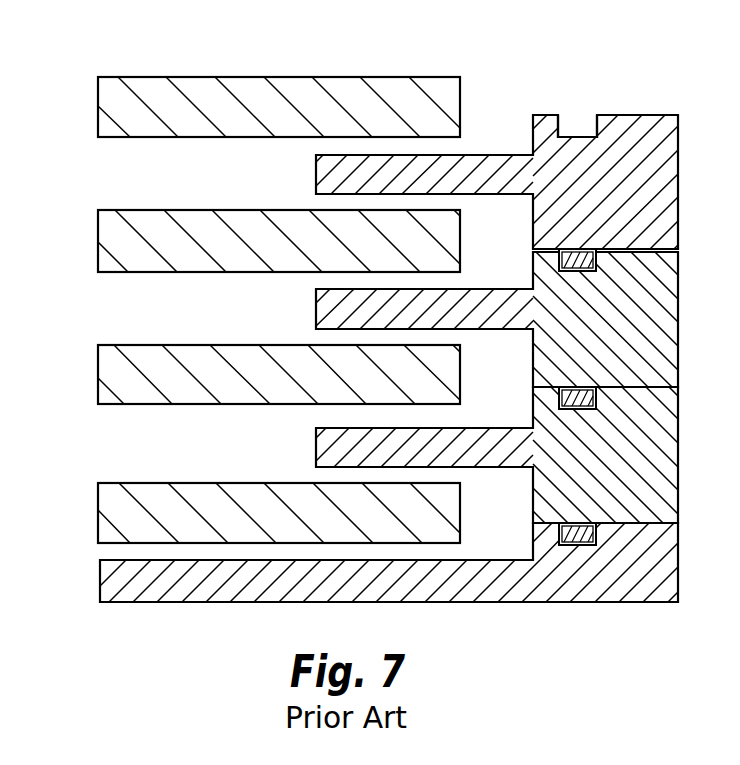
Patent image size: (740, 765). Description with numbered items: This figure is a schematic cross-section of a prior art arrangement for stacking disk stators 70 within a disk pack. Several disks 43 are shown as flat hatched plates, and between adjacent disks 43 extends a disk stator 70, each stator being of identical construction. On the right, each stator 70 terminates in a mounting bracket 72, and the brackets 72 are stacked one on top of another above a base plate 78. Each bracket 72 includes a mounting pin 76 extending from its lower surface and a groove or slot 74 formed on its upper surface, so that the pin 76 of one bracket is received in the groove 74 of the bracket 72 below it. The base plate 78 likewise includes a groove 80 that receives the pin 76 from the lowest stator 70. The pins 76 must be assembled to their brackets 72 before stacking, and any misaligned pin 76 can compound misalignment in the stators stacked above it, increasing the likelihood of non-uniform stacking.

The disks 43 is at (246, 122).
The disk stators 70 is at (490, 173).
The mounting brackets 72 is at (650, 161).
The groove or slot 74 is at (593, 128).
The mounting pin 76 is at (577, 255).
The base plate 78 is at (547, 590).
The groove 80 is at (583, 545).